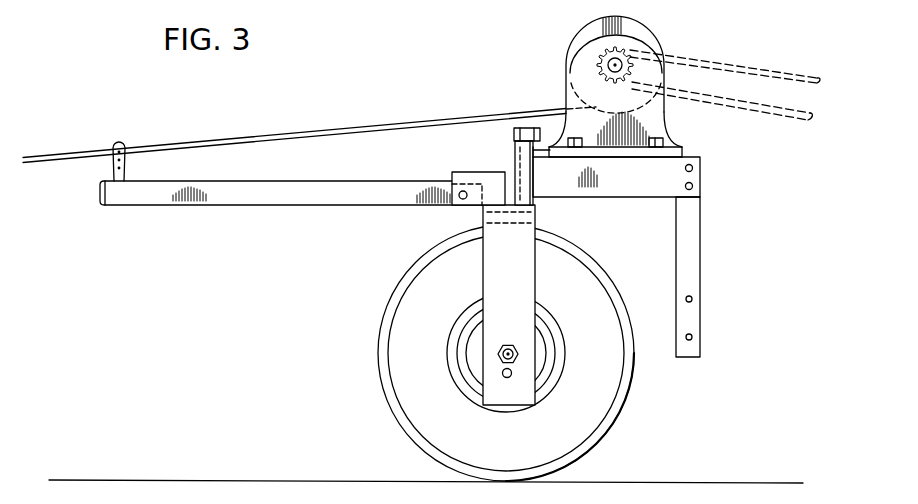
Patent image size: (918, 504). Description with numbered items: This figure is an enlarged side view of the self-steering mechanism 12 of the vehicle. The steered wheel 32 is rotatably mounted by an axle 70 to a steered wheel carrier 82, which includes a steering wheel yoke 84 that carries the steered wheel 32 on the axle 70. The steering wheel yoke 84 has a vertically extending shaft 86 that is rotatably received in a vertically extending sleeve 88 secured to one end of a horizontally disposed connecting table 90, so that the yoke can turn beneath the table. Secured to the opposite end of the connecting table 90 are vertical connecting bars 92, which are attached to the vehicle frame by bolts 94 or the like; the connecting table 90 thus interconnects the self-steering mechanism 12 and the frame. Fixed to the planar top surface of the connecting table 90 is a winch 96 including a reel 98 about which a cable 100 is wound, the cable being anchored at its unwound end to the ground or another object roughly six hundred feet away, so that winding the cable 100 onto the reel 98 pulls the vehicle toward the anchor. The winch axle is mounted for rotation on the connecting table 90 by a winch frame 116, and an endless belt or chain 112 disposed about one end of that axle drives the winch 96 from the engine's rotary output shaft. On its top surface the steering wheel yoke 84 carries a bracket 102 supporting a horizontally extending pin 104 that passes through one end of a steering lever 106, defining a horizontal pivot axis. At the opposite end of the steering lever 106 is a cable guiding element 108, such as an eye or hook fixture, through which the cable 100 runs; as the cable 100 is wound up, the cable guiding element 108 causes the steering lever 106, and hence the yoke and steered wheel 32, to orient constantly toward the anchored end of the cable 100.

The self-steering mechanism 12 is at (405, 114).
The steered wheel 32 is at (395, 407).
The axle 70 is at (500, 353).
The steered wheel carrier 82 is at (467, 218).
The steering wheel yoke 84 is at (523, 283).
The vertically extending shaft 86 is at (527, 118).
The vertically extending sleeve 88 is at (534, 150).
The connecting table 90 is at (637, 184).
The vertical connecting bars 92 is at (697, 265).
The bolts 94 is at (692, 299).
The winch 96 is at (663, 32).
The reel 98 is at (578, 33).
The cable 100 is at (325, 136).
The bracket 102 is at (477, 173).
The horizontally extending pin 104 is at (459, 192).
The steering lever 106 is at (292, 205).
The cable guiding element 108 is at (125, 165).
The endless belt or chain 112 is at (784, 118).
The winch frame 116 is at (658, 117).